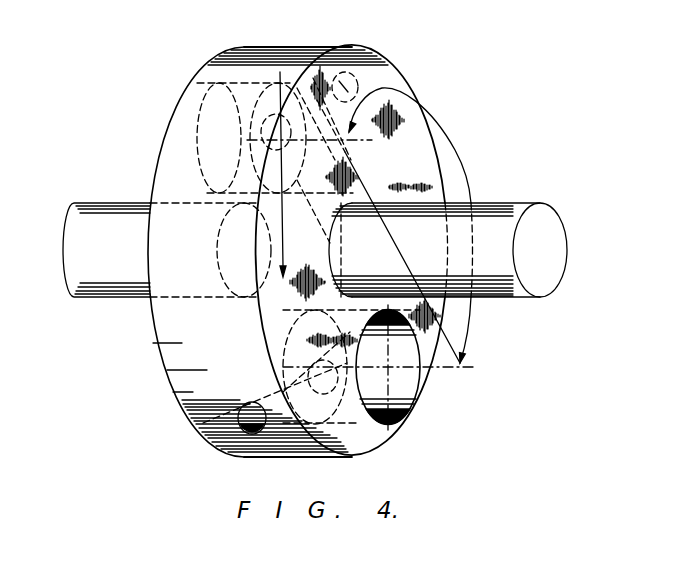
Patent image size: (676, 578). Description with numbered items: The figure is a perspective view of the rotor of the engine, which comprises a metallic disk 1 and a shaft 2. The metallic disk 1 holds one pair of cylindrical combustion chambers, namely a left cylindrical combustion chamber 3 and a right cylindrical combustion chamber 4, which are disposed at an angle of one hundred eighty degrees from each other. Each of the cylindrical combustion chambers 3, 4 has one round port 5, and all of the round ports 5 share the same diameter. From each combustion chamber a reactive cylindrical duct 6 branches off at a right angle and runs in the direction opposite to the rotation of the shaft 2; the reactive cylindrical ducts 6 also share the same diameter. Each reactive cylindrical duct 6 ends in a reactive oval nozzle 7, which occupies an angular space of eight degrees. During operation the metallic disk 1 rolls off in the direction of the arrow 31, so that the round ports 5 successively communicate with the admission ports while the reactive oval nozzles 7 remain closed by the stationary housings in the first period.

The metallic disk 1 is at (214, 350).
The shaft 2 is at (497, 255).
The left cylindrical combustion chamber 3 is at (251, 98).
The right cylindrical combustion chamber 4 is at (351, 398).
The round port 5 is at (182, 132).
The reactive cylindrical duct 6 is at (317, 100).
The reactive oval nozzle 7 is at (351, 82).
The arrow 31 is at (287, 242).